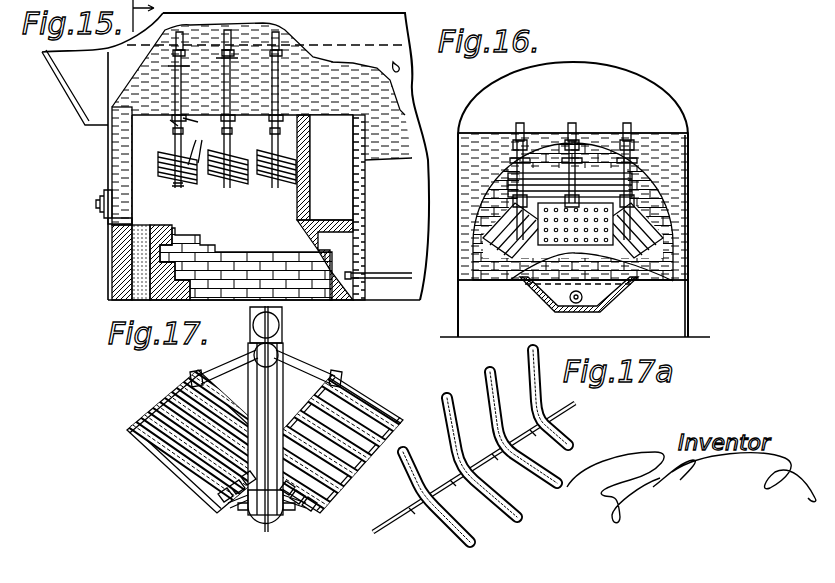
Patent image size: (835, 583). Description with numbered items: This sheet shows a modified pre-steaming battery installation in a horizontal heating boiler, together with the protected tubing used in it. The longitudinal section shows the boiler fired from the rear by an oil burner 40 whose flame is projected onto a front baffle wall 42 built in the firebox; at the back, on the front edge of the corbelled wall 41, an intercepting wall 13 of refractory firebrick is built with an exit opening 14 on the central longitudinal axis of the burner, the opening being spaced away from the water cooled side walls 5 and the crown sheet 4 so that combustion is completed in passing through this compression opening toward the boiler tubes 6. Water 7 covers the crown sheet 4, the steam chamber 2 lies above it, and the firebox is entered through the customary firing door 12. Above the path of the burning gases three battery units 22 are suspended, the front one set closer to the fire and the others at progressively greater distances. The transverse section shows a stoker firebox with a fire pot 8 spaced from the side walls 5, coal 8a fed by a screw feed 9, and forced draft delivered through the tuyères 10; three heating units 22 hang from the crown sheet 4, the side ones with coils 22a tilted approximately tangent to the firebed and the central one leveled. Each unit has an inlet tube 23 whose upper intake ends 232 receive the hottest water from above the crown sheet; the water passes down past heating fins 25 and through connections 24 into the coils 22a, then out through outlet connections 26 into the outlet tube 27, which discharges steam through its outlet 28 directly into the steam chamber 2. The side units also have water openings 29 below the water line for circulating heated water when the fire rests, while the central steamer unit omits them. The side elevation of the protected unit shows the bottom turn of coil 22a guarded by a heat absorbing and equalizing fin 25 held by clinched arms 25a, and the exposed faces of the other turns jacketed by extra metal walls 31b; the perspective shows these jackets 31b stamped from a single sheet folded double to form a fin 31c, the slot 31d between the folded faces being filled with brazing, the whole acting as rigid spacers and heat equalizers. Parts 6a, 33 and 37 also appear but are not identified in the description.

In FIG. 15, the steam compartment 2 is at (299, 47).
In FIG. 16, the steam compartment 2 is at (642, 97).
In FIG. 15, the crown sheet 4 is at (148, 125).
In FIG. 15, the side walls 5 is at (144, 149).
In FIG. 16, the side walls 5 is at (689, 240).
In FIG. 15, the boiler tubes 6 is at (412, 146).
In FIG. 16, the boiler tubes 6 is at (596, 247).
In FIG. 15, the tie 6a is at (390, 88).
In FIG. 15, the water 7 is at (394, 107).
In FIG. 16, the fire pot 8 is at (606, 300).
In FIG. 16, the coal 8a is at (580, 272).
In FIG. 16, the screw feed 9 is at (583, 297).
In FIG. 16, the tuyères 10 is at (526, 282).
In FIG. 15, the firing door 12 is at (96, 203).
In FIG. 15, the intercepting wall 13 is at (310, 160).
In FIG. 16, the intercepting wall 13 is at (667, 207).
In FIG. 15, the exit opening 14 is at (315, 200).
In FIG. 16, the exit opening 14 is at (590, 222).
In FIG. 15, the battery unit 22 is at (232, 186).
In FIG. 17, the battery unit 22 is at (209, 359).
In FIG. 15, the coils 22a is at (288, 162).
In FIG. 16, the coils 22a is at (698, 214).
In FIG. 17, the coils 22a is at (366, 373).
In FIG. 15, the inlet tube 23 is at (271, 145).
In FIG. 16, the inlet tube 23 is at (645, 176).
In FIG. 17, the inlet tube 23 is at (283, 336).
In FIG. 15, the upper ends of inlet tube 232 is at (226, 52).
In FIG. 16, the upper ends of inlet tube 232 is at (656, 121).
In FIG. 17, the connections 24 is at (240, 506).
In FIG. 15, the heating fin 25 is at (174, 184).
In FIG. 17, the heating fin 25 is at (262, 388).
In FIG. 17, the protective and holding arms 25a is at (226, 506).
In FIG. 17, the outlet connections 26 is at (280, 355).
In FIG. 15, the outlet tube 27 is at (240, 129).
In FIG. 16, the outlet tube 27 is at (625, 124).
In FIG. 17, the outlet tube 27 is at (252, 348).
In FIG. 15, the outlet 28 is at (184, 34).
In FIG. 16, the outlet 28 is at (521, 125).
In FIG. 15, the water intake and outlet opening 29 is at (223, 73).
In FIG. 16, the water intake and outlet opening 29 is at (528, 146).
In FIG. 17, the protective arms 31b is at (412, 417).
In FIG. 17A, the protective arms 31b is at (446, 395).
In FIG. 17, the fin 31c is at (247, 412).
In FIG. 17A, the fin 31c is at (408, 528).
In FIG. 17A, the slot 31d is at (388, 518).
In FIG. 15, the bracket 33 is at (173, 122).
In FIG. 15, the bracket 37 is at (198, 120).
In FIG. 15, the oil burner 40 is at (383, 274).
In FIG. 15, the corbelled wall 41 is at (365, 233).
In FIG. 15, the front baffle wall 42 is at (175, 256).